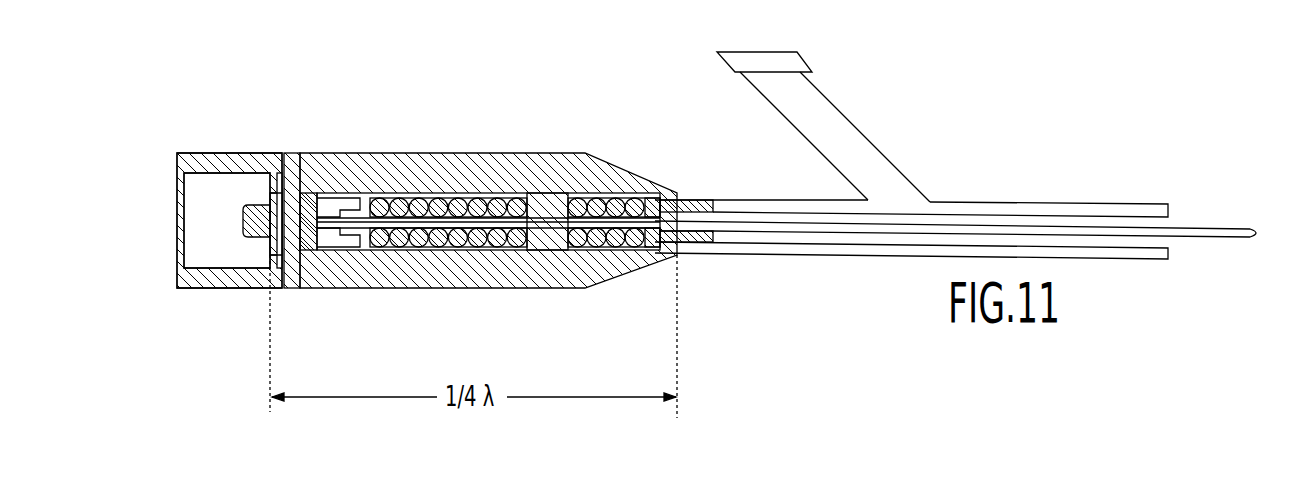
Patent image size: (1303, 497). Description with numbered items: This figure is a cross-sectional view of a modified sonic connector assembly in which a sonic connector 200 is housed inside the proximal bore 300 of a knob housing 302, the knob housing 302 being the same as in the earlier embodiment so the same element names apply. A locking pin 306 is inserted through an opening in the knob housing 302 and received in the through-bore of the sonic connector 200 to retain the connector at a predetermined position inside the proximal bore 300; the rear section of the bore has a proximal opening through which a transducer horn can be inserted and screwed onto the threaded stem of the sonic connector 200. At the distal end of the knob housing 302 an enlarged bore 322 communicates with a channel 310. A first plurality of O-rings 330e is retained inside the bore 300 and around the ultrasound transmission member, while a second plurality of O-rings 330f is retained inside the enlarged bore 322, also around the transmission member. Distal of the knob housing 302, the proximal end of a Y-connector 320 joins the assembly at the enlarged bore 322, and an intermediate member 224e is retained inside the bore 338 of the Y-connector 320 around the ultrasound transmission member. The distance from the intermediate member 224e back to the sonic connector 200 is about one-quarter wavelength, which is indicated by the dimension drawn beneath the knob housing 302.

The sonic connector 200 is at (235, 250).
The locking pin 306 is at (291, 155).
The knob housing 302 is at (370, 155).
The proximal bore 300 is at (345, 250).
The channel 310 is at (548, 235).
The first plurality of O-rings 330e is at (455, 250).
The second plurality of O-rings 330f is at (612, 200).
The enlarged bore 322 is at (638, 250).
The bore of the Y-connector 338 is at (740, 210).
The intermediate member 224e is at (693, 232).
The Y-connector 320 is at (940, 188).